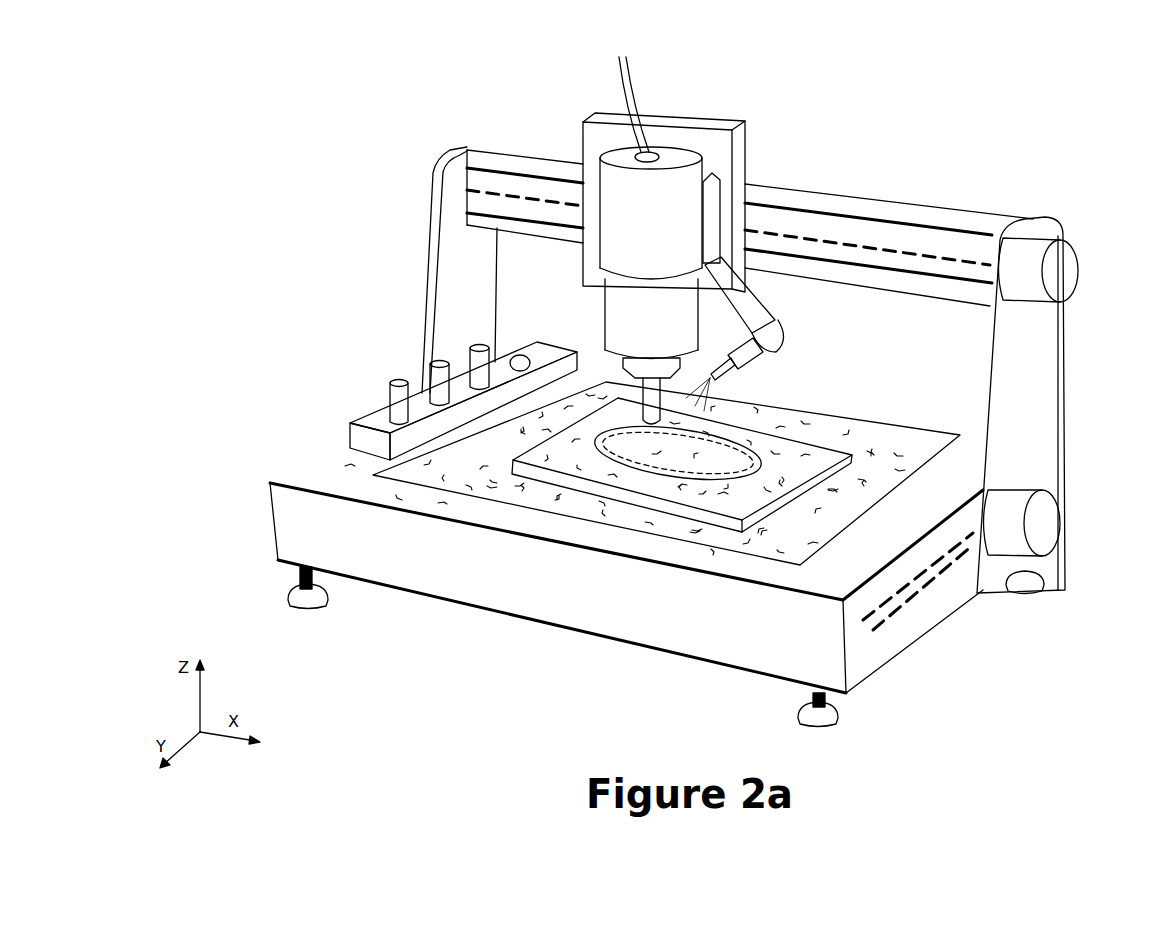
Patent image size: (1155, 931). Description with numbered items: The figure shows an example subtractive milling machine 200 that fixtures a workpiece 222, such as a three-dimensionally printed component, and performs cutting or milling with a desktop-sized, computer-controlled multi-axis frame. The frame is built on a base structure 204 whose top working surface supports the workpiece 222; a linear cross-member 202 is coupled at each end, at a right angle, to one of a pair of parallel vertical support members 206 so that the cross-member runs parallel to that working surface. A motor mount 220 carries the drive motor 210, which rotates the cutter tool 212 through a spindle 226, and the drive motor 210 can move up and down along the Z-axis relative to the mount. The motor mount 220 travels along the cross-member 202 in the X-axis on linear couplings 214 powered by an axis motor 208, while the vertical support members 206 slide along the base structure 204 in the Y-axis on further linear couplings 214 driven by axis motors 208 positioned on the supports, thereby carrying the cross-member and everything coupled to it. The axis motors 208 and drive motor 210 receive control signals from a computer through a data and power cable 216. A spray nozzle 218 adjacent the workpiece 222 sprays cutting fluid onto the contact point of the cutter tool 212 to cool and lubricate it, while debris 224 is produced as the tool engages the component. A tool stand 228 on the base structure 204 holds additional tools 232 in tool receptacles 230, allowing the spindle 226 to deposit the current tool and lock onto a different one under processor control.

The subtractive milling machine 200 is at (318, 102).
The linear cross-member 202 is at (948, 209).
The base structure 204 is at (292, 473).
The vertical support members 206 is at (1067, 350).
The axis motors 208 is at (1075, 266).
The drive motor 210 is at (602, 247).
The cutter tool 212 is at (642, 407).
The linear couplings 214 is at (880, 622).
The data and power cable 216 is at (620, 82).
The spray nozzle 218 is at (773, 352).
The motor mount 220 is at (745, 160).
The workpiece 222 is at (528, 454).
The debris 224 is at (906, 454).
The spindle 226 is at (602, 308).
The tool stand 228 is at (357, 415).
The tool receptacles 230 is at (520, 352).
The tools 232 is at (384, 400).